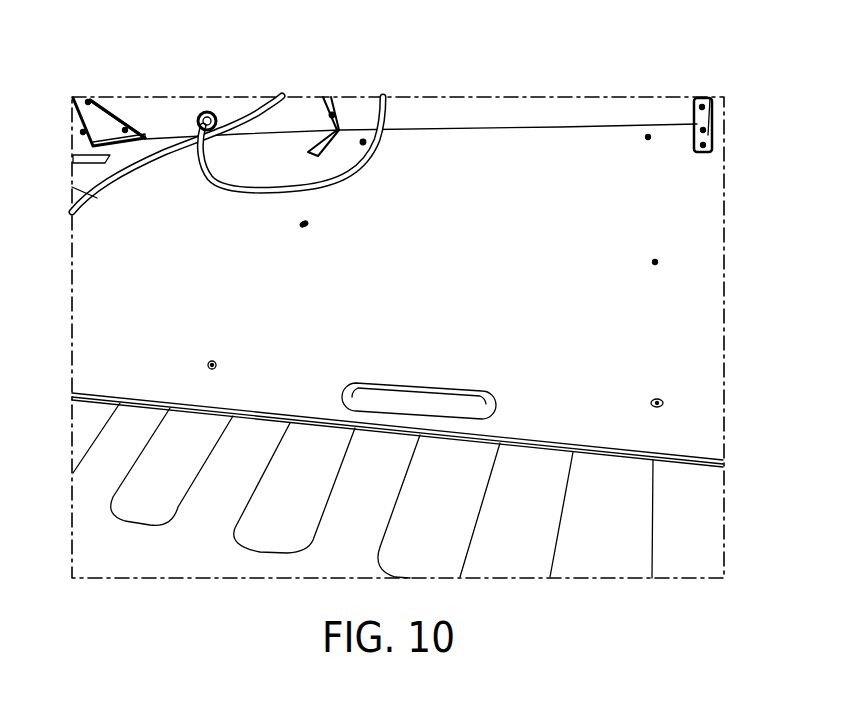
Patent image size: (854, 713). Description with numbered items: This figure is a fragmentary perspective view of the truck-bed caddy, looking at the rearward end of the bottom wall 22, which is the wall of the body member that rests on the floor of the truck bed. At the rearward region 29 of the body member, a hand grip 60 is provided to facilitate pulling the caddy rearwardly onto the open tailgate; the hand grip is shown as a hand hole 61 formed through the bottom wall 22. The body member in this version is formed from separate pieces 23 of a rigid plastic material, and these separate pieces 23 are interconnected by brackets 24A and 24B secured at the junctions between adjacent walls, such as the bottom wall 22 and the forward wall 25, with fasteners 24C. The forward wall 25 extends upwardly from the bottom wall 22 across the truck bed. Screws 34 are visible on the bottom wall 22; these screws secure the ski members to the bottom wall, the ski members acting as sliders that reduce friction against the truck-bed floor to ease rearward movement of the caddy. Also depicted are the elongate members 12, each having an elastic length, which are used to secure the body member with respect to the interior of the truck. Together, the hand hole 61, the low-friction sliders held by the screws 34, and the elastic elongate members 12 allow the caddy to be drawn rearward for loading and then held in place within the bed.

The elongate members 12 is at (227, 143).
The bottom wall 22 is at (72, 187).
The separate pieces 23 is at (575, 107).
The bracket 24A is at (345, 122).
The bracket 24B is at (107, 118).
The fasteners 24C is at (88, 100).
The forward wall 25 is at (488, 107).
The rearward region 29 is at (612, 435).
The screws 34 is at (300, 225).
The hand grip 60 is at (473, 392).
The hand hole 61 is at (412, 402).